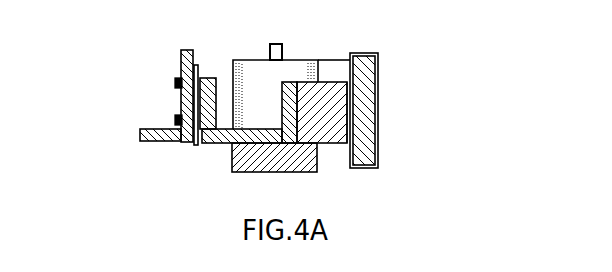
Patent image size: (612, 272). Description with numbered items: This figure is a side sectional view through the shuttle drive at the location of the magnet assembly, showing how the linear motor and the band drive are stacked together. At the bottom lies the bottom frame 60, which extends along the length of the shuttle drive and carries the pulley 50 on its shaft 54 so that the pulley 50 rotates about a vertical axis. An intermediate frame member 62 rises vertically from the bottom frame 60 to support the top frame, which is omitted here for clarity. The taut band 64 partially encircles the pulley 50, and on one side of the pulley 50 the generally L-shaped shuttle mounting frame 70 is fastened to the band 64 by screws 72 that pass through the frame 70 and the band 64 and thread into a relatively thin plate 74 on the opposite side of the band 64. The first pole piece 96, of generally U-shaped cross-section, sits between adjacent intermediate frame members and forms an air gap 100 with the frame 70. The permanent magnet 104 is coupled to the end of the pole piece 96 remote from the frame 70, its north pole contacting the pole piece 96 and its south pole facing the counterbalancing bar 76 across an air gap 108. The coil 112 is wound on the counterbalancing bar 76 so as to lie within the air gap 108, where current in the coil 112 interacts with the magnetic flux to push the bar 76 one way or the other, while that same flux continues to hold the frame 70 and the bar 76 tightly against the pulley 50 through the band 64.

The pulley 50 is at (327, 66).
The shaft 54 is at (277, 43).
The bottom frame 60 is at (277, 172).
The intermediate frame member 62 is at (252, 59).
The taut band 64 is at (194, 63).
The shuttle mounting frame 70 is at (158, 128).
The screw 72 is at (175, 82).
The thin plate 74 is at (195, 145).
The counterbalancing bar 76 is at (368, 110).
The first pole piece 96 is at (224, 132).
The air gap 100 is at (206, 77).
The permanent magnet 104 is at (332, 145).
The air gap 108 is at (346, 80).
The coil 112 is at (378, 64).